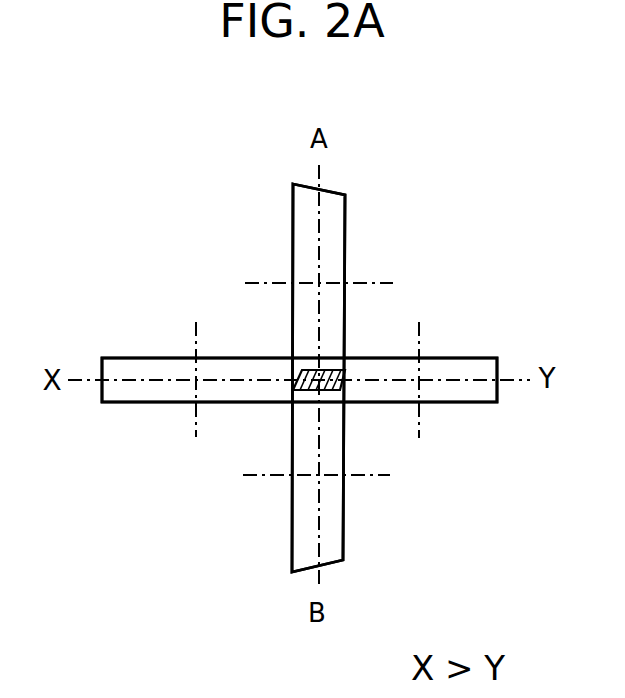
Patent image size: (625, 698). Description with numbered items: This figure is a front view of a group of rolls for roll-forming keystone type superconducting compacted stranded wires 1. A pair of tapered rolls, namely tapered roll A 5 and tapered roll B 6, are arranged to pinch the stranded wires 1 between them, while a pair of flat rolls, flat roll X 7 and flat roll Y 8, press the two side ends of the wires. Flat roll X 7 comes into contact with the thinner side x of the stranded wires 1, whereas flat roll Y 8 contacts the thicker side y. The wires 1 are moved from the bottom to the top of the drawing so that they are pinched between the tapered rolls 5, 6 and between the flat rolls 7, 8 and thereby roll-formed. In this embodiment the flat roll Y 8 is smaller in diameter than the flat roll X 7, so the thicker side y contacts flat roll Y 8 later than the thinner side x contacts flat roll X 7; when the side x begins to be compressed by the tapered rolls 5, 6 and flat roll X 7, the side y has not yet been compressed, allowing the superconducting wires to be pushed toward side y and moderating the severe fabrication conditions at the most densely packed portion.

The keystone type superconducting compacted stranded wires 1 is at (325, 372).
The tapered roll A 5 is at (332, 227).
The tapered roll B 6 is at (300, 523).
The flat roll X 7 is at (143, 370).
The flat roll Y 8 is at (470, 390).